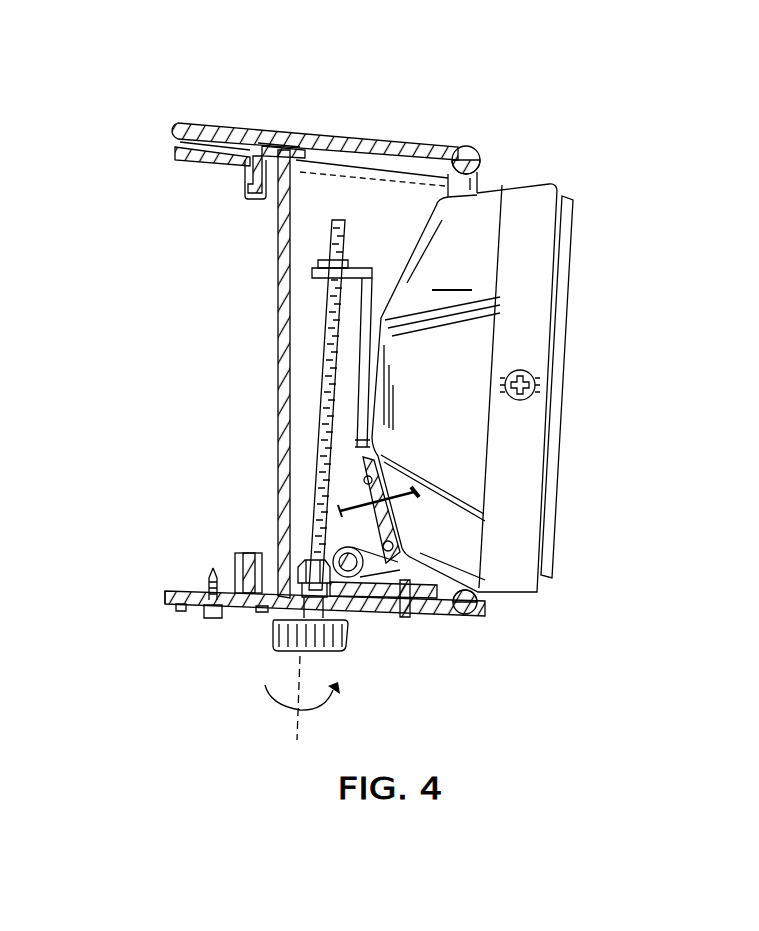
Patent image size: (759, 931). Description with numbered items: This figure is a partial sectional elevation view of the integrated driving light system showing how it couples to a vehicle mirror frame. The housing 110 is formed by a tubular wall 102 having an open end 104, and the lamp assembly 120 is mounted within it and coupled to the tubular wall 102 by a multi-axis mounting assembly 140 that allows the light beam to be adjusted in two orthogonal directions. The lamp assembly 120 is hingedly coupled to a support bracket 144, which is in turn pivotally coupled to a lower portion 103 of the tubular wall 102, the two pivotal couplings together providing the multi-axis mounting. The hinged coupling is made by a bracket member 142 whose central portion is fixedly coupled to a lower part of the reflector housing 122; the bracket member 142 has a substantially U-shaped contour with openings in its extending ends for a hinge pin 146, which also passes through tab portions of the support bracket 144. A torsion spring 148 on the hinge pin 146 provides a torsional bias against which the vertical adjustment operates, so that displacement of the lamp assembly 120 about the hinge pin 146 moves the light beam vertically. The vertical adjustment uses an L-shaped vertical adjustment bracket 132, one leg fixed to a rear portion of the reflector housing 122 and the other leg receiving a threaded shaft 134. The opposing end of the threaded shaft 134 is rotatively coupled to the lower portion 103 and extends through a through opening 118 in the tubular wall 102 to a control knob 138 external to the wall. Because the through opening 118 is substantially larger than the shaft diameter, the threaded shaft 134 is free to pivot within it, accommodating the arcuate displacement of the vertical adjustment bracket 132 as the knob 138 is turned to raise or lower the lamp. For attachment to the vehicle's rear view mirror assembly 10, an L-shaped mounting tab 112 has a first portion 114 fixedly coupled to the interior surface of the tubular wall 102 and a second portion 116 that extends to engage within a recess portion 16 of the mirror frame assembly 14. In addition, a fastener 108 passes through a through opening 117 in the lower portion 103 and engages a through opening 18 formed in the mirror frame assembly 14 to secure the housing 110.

The rear view mirror assembly 10 is at (163, 604).
The mirror frame assembly 14 is at (192, 162).
The recess portion 16 is at (246, 199).
The through opening 18 is at (214, 592).
The tubular wall 102 is at (396, 142).
The lower portion 103 is at (262, 612).
The open end 104 is at (486, 171).
The fastener 108 is at (209, 620).
The housing 110 is at (437, 140).
The mounting tab 112 is at (291, 148).
The first portion 114 is at (300, 150).
The second portion 116 is at (272, 145).
The through opening 117 is at (182, 612).
The through opening 118 is at (332, 615).
The lamp assembly 120 is at (583, 220).
The reflector housing 122 is at (464, 388).
The vertical adjustment bracket 132 is at (371, 266).
The threaded shaft 134 is at (326, 318).
The control knob 138 is at (342, 645).
The multi-axis mounting assembly 140 is at (420, 600).
The bracket member 142 is at (356, 494).
The support bracket 144 is at (470, 614).
The hinge pin 146 is at (334, 550).
The torsion spring 148 is at (340, 520).